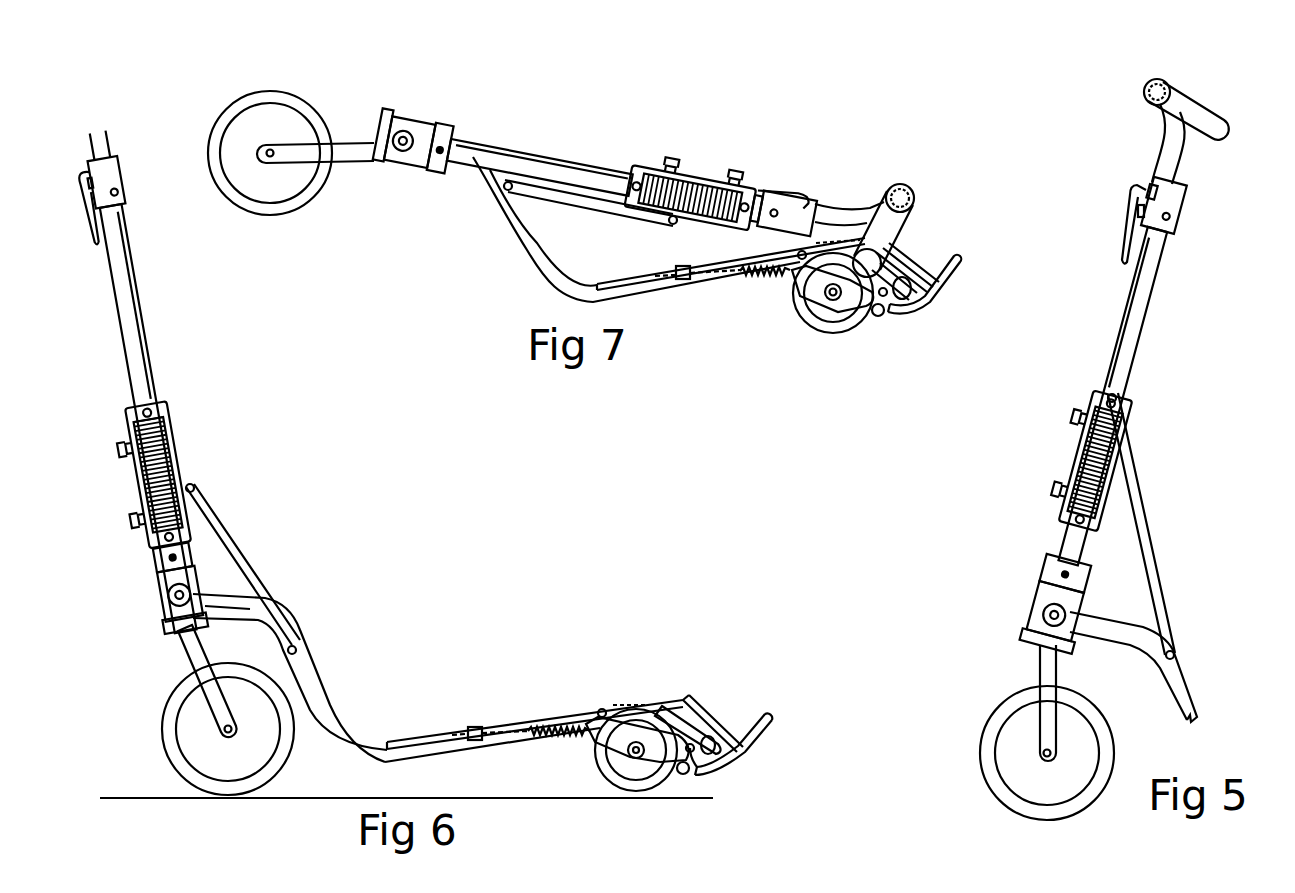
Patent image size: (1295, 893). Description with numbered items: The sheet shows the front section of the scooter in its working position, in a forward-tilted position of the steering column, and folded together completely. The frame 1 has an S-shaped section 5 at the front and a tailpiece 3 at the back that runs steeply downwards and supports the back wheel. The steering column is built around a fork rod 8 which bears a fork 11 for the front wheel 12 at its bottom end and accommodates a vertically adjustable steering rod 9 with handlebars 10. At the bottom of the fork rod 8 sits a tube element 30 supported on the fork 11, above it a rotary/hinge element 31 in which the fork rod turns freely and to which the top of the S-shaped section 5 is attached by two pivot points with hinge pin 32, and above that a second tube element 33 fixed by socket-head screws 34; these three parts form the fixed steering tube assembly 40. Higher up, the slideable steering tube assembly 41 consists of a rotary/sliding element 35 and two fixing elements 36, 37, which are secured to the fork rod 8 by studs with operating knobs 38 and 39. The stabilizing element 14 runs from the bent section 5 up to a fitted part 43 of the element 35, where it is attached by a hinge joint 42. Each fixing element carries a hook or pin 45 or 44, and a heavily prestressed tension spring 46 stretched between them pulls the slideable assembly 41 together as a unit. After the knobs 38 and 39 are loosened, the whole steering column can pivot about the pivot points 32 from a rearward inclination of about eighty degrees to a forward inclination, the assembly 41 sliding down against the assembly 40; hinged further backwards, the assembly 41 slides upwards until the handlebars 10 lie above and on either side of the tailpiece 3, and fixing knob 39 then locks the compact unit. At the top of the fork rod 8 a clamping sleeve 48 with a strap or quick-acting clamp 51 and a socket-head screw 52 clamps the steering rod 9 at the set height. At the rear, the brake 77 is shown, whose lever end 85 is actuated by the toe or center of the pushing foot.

In FIG. 6, the frame 1 is at (480, 705).
In FIG. 7, the frame 1 is at (612, 254).
In FIG. 6, the tailpiece 3 is at (660, 703).
In FIG. 7, the tailpiece 3 is at (890, 260).
In FIG. 5, the S-shaped section 5 is at (1186, 690).
In FIG. 6, the fork rod 8 is at (140, 306).
In FIG. 7, the fork rod 8 is at (590, 172).
In FIG. 5, the fork rod 8 is at (1160, 264).
In FIG. 5, the steering rod 9 is at (1150, 143).
In FIG. 7, the handlebars 10 is at (886, 200).
In FIG. 5, the handlebars 10 is at (1200, 110).
In FIG. 6, the fork 11 is at (178, 660).
In FIG. 5, the fork 11 is at (1042, 678).
In FIG. 7, the front wheel 12 is at (270, 153).
In FIG. 5, the front wheel 12 is at (990, 769).
In FIG. 5, the stabilizing element 14 is at (1152, 588).
In FIG. 5, the tube element 30 is at (1035, 650).
In FIG. 5, the rotary/hinge element 31 is at (1040, 610).
In FIG. 5, the hinge pin 32 is at (1036, 630).
In FIG. 5, the second tube element 33 is at (1042, 584).
In FIG. 5, the socket-head screws 34 is at (1047, 570).
In FIG. 5, the rotary/sliding element 35 is at (1078, 452).
In FIG. 5, the fixing element 36 is at (1065, 518).
In FIG. 5, the fixing element 37 is at (1108, 350).
In FIG. 5, the operating knob 38 is at (1073, 403).
In FIG. 5, the operating knob 39 is at (1060, 480).
In FIG. 6, the fixed steering tube assembly 40 is at (130, 638).
In FIG. 7, the fixed steering tube assembly 40 is at (380, 108).
In FIG. 6, the slideable steering tube assembly 41 is at (96, 418).
In FIG. 7, the slideable steering tube assembly 41 is at (632, 160).
In FIG. 5, the slideable steering tube assembly 41 is at (1088, 459).
In FIG. 5, the hinge joint 42 is at (1125, 481).
In FIG. 5, the fitted part 43 is at (1127, 460).
In FIG. 5, the hook or pin 44 is at (1118, 395).
In FIG. 5, the hook or pin 45 is at (1085, 520).
In FIG. 5, the tension spring 46 is at (1110, 420).
In FIG. 5, the clamping sleeve 48 is at (1172, 203).
In FIG. 5, the strap or quick-acting clamp 51 is at (1140, 190).
In FIG. 5, the socket-head screw 52 is at (1140, 215).
In FIG. 6, the brake 77 is at (751, 786).
In FIG. 6, the end of the brake lever 85 is at (772, 722).
In FIG. 7, the end of the brake lever 85 is at (924, 284).